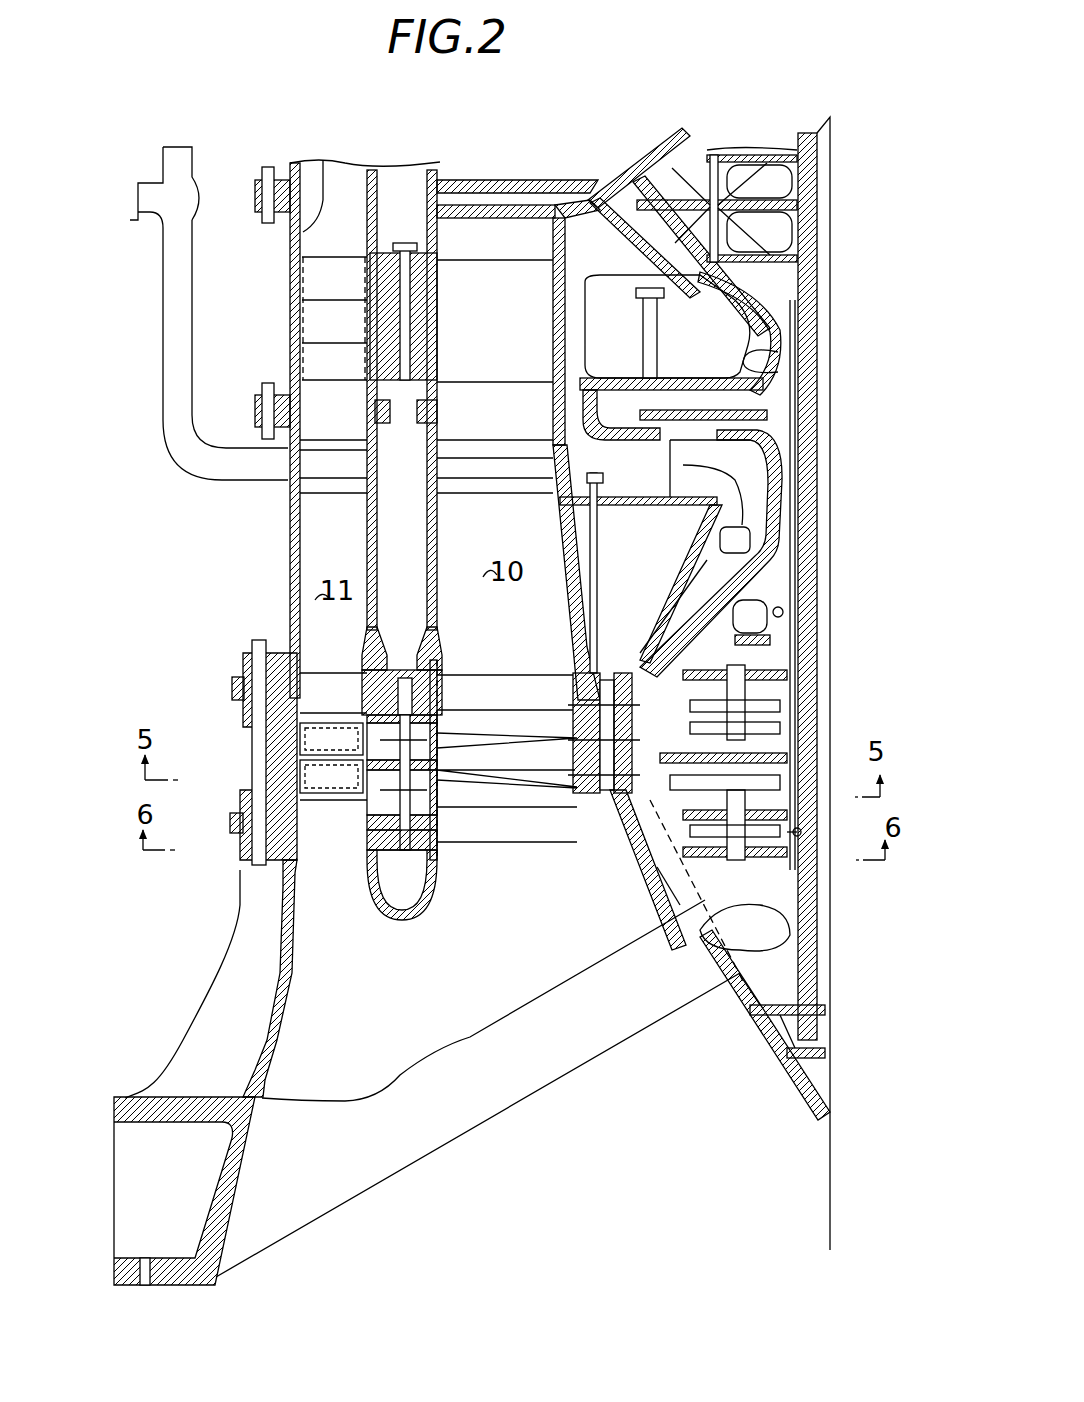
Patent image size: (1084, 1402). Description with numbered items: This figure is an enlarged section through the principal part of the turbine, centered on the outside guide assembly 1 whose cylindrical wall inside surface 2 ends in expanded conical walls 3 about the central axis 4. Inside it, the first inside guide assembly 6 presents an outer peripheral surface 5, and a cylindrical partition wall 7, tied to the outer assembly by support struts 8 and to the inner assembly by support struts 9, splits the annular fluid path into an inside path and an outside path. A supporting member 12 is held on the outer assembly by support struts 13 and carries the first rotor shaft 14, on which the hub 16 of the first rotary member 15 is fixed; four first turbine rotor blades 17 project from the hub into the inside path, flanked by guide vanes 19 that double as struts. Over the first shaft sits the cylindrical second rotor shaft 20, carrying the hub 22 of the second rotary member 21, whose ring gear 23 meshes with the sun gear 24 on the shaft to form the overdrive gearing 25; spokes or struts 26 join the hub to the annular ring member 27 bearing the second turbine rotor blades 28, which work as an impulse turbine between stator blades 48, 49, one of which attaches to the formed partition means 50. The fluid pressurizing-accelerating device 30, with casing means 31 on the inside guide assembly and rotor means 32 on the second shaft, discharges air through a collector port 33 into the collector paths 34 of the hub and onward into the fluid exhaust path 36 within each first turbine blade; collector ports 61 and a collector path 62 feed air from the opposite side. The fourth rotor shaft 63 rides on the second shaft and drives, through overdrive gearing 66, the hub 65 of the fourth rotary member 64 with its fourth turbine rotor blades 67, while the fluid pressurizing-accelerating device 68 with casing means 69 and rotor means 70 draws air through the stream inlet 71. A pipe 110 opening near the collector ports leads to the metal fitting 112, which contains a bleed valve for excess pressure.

The outside guide assembly 1 is at (285, 597).
The cylindrical wall inside surface 2 is at (318, 195).
The conical walls 3 is at (422, 220).
The central axis 4 is at (130, 352).
The outer peripheral surface 5 is at (560, 527).
The first inside guide assembly 6 is at (549, 406).
The partition wall 7 is at (362, 537).
The support struts 8 is at (317, 310).
The support struts 9 is at (453, 670).
The supporting member 12 is at (745, 990).
The support struts 13 is at (565, 1062).
The first rotor shaft 14 is at (806, 203).
The first rotary member 15 is at (756, 146).
The hub 16 is at (736, 155).
The first turbine rotor blades 17 is at (459, 183).
The guide vanes 19 is at (478, 360).
The second rotor shaft 20 is at (785, 920).
The second rotary member 21 is at (565, 796).
The hub 22 is at (590, 793).
The ring gear 23 is at (660, 833).
The sun gear 24 is at (799, 833).
The overdrive gearing 25 is at (683, 920).
The spokes or struts 26 is at (477, 795).
The annular ring member 27 is at (365, 765).
The second turbine rotor blades 28 is at (333, 790).
The fluid pressurizing-accelerating device 30 is at (752, 382).
The casing means 31 is at (742, 354).
The rotor means 32 is at (767, 330).
The collector port 33 is at (703, 302).
The collector paths 34 is at (643, 257).
The fluid exhaust path 36 is at (510, 197).
The stator blade 48 is at (300, 826).
The stator blade 49 is at (310, 690).
The partition means 50 is at (393, 920).
The collector ports 61 is at (690, 135).
The collector path 62 is at (635, 163).
The fourth rotor shaft 63 is at (800, 623).
The fourth rotary member 64 is at (470, 727).
The hub 65 is at (557, 733).
The overdrive gearing 66 is at (790, 723).
The fourth turbine rotor blades 67 is at (307, 737).
The fluid pressurizing-accelerating device 68 is at (712, 558).
The casing means 69 is at (757, 513).
The rotor means 70 is at (743, 468).
The stream inlet 71 is at (657, 867).
The pipe 110 is at (198, 468).
The metal fitting 112 is at (137, 193).